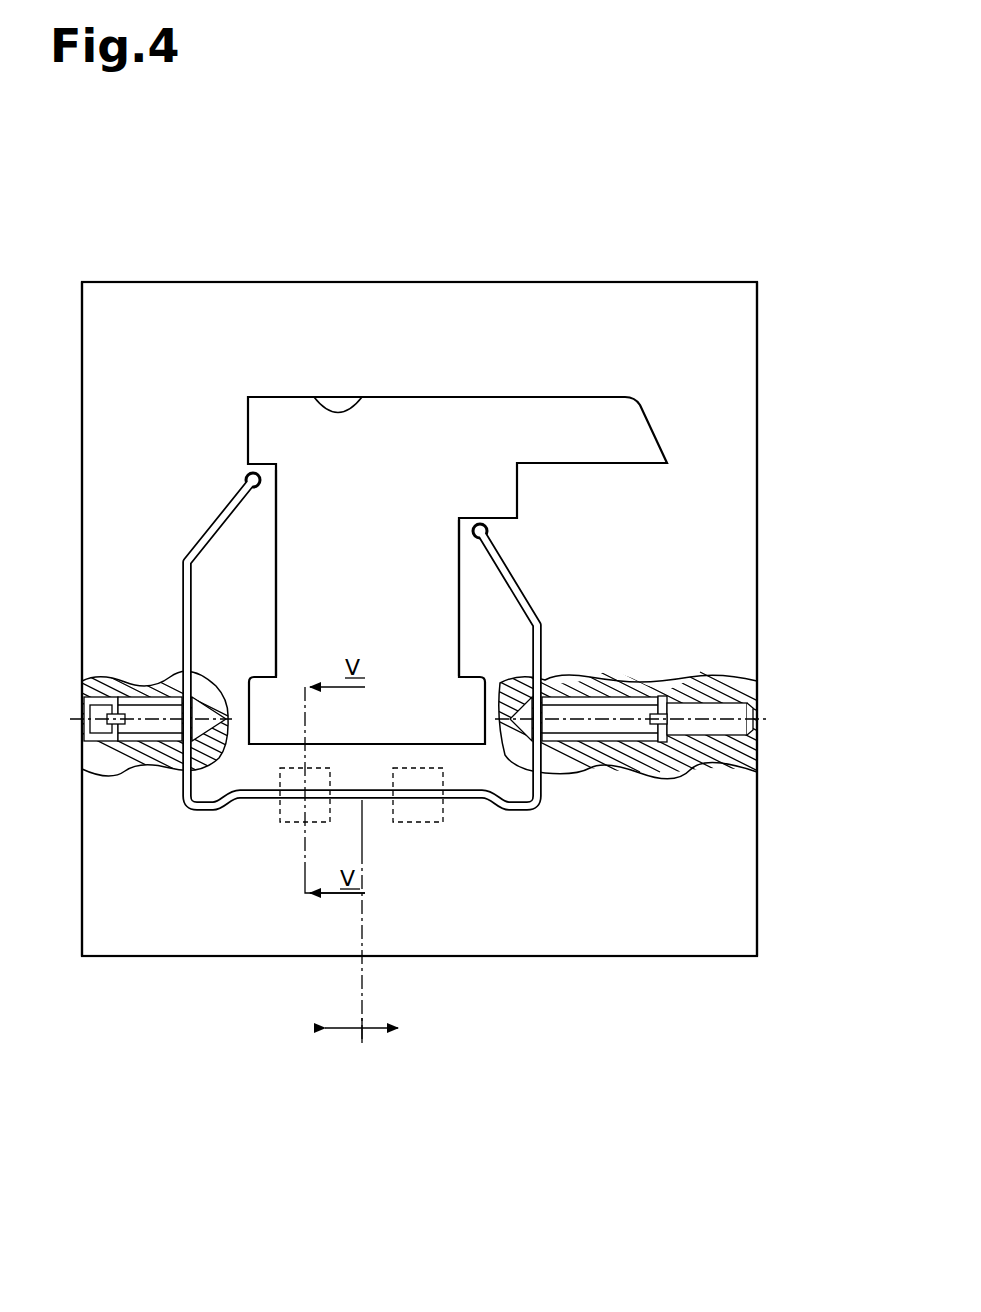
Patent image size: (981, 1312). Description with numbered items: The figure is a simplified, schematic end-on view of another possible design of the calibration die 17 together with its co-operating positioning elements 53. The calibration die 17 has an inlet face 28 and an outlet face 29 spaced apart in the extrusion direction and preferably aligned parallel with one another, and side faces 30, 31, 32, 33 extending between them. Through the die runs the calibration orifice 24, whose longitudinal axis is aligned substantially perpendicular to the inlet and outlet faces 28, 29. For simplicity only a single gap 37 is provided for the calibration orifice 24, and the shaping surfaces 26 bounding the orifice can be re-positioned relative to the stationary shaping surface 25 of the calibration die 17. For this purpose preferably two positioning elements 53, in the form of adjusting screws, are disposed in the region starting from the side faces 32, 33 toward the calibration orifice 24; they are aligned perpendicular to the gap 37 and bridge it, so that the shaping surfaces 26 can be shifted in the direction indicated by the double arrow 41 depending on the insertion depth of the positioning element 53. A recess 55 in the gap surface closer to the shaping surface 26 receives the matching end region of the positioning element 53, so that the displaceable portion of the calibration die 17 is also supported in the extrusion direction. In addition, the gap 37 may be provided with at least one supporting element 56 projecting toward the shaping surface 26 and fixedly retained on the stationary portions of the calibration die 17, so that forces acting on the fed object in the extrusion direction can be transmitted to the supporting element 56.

The calibration die 17 is at (634, 312).
The calibration orifice 24 is at (400, 466).
The stationary shaping surface 25 is at (316, 397).
The shaping surfaces 26 is at (279, 562).
The inlet face 28 is at (688, 360).
The outlet face 29 is at (688, 330).
The side face 30 is at (545, 282).
The side face 31 is at (537, 958).
The side face 32 is at (760, 500).
The side face 33 is at (79, 413).
The gap 37 is at (460, 800).
The double arrow 41 is at (362, 1032).
The positioning element 53 is at (638, 708).
The recess 55 is at (165, 705).
The supporting element 56 is at (284, 823).